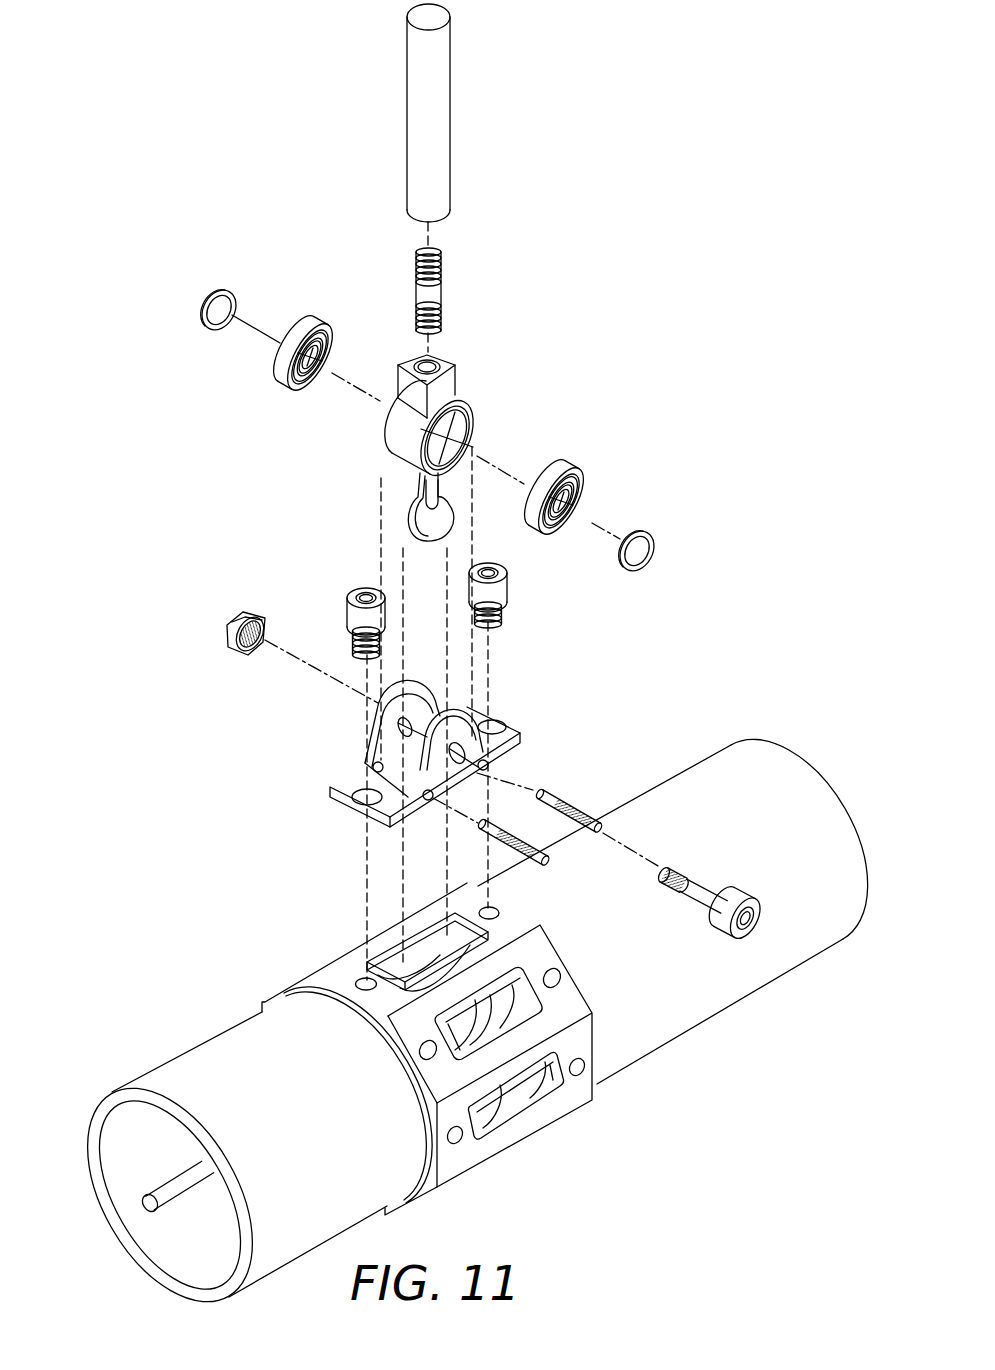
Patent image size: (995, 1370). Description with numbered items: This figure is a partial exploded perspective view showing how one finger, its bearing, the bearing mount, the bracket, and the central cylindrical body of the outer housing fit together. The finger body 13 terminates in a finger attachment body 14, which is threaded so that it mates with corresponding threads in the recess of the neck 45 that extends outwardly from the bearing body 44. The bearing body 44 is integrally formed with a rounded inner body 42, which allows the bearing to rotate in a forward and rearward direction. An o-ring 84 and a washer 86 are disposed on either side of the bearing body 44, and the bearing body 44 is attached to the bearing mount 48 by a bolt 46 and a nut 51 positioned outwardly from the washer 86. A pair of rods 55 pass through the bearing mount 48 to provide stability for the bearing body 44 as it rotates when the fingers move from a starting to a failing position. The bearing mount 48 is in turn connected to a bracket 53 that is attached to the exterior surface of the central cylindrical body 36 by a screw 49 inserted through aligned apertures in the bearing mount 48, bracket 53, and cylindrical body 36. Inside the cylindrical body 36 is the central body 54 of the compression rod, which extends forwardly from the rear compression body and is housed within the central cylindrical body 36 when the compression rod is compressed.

The finger body 13 is at (443, 92).
The finger attachment body 14 is at (425, 298).
The central cylindrical body 36 is at (228, 1065).
The inner body 42 is at (415, 508).
The bearing body 44 is at (395, 421).
The neck 45 is at (450, 395).
The bolt 46 is at (710, 893).
The bearing mount 48 is at (343, 789).
The screw 49 is at (355, 620).
The nut 51 is at (234, 625).
The bracket 53 is at (337, 972).
The central body 54 is at (160, 1196).
The rods 55 is at (510, 833).
The o-ring 84 is at (283, 375).
The washer 86 is at (208, 322).